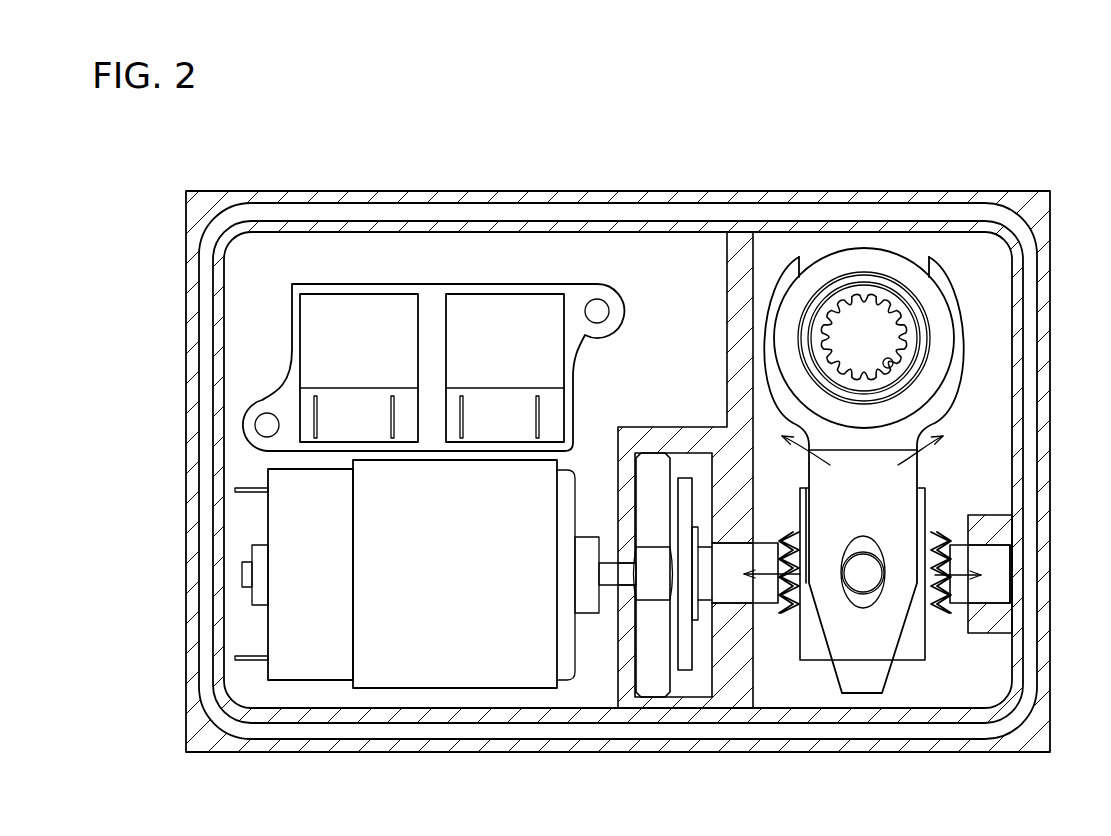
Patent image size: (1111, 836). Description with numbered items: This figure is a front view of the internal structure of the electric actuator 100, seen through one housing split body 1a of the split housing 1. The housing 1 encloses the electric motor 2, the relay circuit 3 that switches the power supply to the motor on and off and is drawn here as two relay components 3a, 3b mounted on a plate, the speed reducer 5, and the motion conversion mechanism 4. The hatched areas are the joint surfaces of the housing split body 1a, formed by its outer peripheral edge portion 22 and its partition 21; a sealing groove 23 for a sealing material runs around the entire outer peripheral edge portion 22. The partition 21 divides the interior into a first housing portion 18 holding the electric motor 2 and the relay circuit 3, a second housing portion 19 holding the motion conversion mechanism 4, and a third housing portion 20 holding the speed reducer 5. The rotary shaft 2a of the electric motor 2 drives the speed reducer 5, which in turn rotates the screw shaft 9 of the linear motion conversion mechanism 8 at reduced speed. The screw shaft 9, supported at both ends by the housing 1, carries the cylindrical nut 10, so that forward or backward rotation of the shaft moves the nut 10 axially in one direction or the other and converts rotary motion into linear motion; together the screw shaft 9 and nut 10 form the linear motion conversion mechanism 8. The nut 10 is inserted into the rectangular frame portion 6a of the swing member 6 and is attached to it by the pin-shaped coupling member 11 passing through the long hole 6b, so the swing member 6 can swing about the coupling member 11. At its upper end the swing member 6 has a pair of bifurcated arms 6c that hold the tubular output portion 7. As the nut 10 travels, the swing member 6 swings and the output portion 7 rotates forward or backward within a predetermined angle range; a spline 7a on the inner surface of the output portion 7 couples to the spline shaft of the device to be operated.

The electric actuator 100 is at (634, 132).
The housing 1 is at (618, 466).
The housing split body 1a is at (711, 190).
The electric motor 2 is at (420, 691).
The rotary shaft 2a is at (612, 580).
The relay circuit 3 is at (462, 142).
The relay 3a is at (385, 292).
The relay 3b is at (476, 292).
The motion conversion mechanism 4 is at (940, 502).
The speed reducer 5 is at (687, 674).
The swing member 6 is at (922, 474).
The rectangular frame portion 6a is at (840, 640).
The long hole 6b is at (858, 602).
The arms 6c is at (781, 294).
The output portion 7 is at (878, 246).
The spline 7a is at (893, 367).
The linear motion conversion mechanism 8 is at (861, 683).
The screw shaft 9 is at (950, 617).
The nut 10 is at (910, 652).
The coupling member 11 is at (862, 560).
The first housing portion 18 is at (266, 329).
The second housing portion 19 is at (985, 348).
The third housing portion 20 is at (705, 652).
The partition 21 is at (732, 495).
The outer peripheral edge portion 22 is at (496, 753).
The sealing groove 23 is at (323, 731).